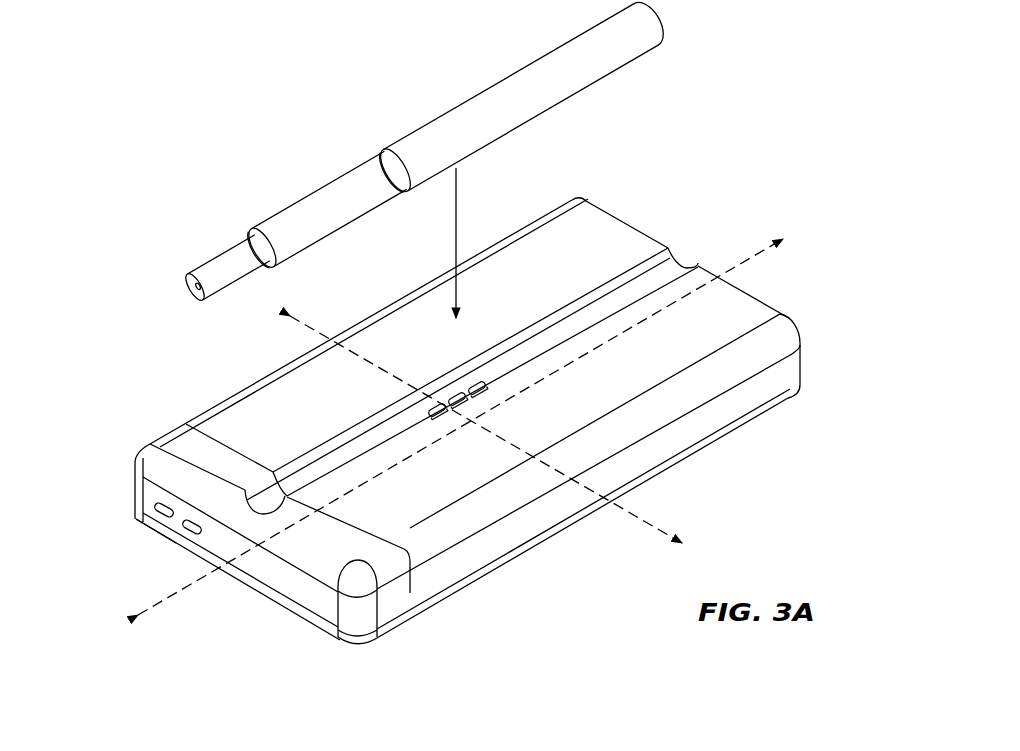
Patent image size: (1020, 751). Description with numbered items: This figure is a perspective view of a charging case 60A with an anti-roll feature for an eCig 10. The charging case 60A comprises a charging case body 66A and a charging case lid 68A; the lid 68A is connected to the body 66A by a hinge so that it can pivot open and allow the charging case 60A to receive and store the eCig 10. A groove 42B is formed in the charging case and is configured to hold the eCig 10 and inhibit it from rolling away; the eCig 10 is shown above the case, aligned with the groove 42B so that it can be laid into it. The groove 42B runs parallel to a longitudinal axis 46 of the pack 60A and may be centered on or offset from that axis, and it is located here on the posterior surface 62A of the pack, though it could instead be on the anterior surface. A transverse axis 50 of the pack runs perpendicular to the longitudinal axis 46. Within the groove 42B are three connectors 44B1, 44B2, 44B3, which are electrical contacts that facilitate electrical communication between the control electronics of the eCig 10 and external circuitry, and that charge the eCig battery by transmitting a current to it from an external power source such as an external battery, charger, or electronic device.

The eCig 10 is at (352, 106).
The charging case 60A is at (460, 434).
The posterior surface 62A is at (736, 312).
The groove 42B is at (632, 282).
The connector 44B1 is at (430, 410).
The connector 44B2 is at (454, 396).
The connector 44B3 is at (475, 383).
The longitudinal axis 46 is at (172, 590).
The transverse axis 50 is at (647, 521).
The charging case body 66A is at (478, 581).
The charging case lid 68A is at (273, 606).